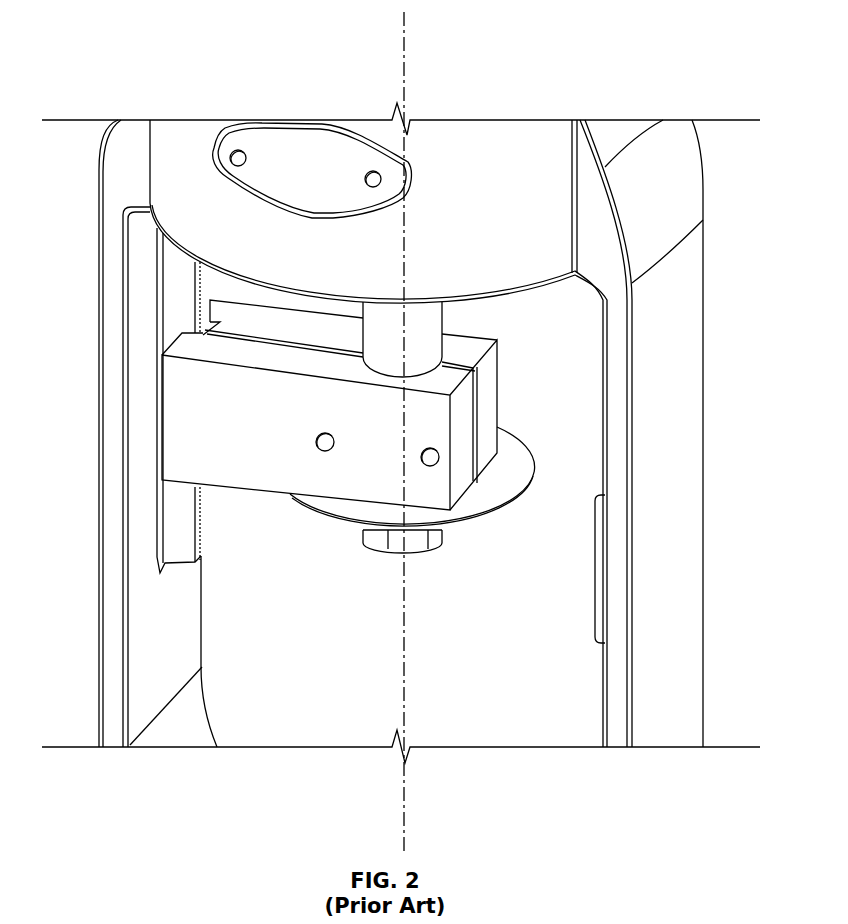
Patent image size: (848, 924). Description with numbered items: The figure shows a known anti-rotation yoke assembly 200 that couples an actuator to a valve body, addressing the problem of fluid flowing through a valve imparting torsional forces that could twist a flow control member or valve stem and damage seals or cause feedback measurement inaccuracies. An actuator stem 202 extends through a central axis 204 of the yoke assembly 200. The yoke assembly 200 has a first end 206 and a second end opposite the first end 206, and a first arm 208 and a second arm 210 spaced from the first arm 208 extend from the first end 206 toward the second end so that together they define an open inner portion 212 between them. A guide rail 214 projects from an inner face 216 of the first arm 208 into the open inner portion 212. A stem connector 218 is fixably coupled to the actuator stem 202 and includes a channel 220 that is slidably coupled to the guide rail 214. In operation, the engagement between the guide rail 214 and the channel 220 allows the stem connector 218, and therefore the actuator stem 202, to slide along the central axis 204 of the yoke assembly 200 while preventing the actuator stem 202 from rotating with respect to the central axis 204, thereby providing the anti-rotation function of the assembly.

The anti-rotation yoke assembly 200 is at (222, 45).
The actuator stem 202 is at (430, 342).
The central axis 204 is at (404, 50).
The first end 206 is at (688, 177).
The first arm 208 is at (107, 607).
The second arm 210 is at (688, 587).
The open inner portion 212 is at (388, 687).
The guide rail 214 is at (187, 545).
The inner face 216 is at (192, 656).
The stem connector 218 is at (260, 487).
The channel 220 is at (188, 332).